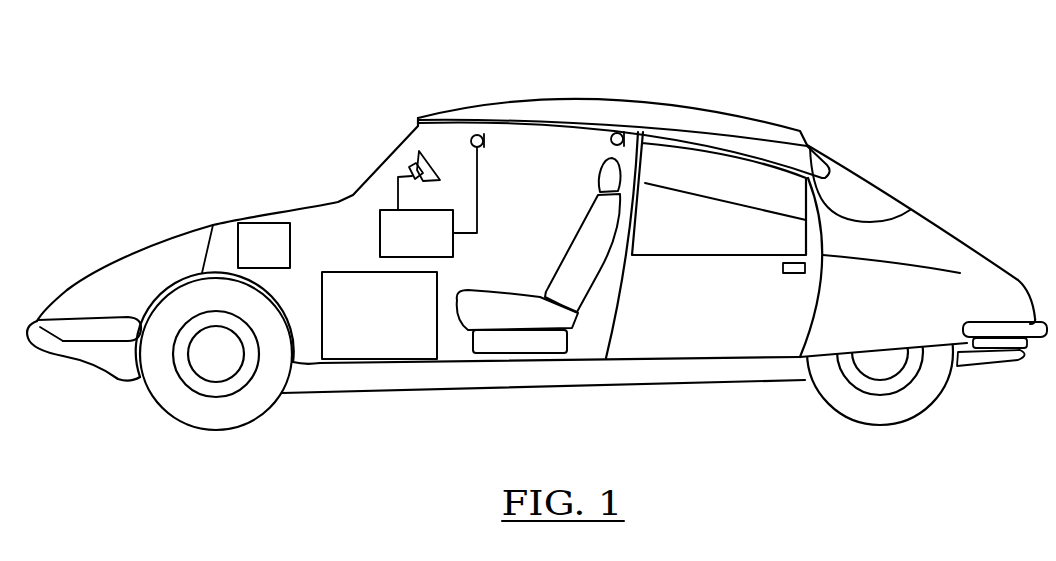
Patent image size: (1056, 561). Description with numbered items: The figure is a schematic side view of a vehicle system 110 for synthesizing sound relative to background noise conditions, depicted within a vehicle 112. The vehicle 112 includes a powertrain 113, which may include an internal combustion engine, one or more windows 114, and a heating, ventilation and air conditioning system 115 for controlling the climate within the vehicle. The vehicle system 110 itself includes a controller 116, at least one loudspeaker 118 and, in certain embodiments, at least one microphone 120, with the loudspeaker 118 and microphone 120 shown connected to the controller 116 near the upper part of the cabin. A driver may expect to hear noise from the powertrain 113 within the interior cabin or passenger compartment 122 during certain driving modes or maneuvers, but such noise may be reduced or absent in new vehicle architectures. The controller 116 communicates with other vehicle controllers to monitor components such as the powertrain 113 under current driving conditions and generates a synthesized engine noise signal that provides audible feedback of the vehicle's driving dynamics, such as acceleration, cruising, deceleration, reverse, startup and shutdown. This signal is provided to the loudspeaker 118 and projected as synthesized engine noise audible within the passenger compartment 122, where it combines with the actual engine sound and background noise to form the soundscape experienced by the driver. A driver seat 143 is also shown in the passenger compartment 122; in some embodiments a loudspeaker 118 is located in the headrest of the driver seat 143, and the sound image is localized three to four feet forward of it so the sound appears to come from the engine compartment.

The vehicle system 110 is at (330, 64).
The vehicle 112 is at (862, 175).
The powertrain 113 is at (262, 213).
The windows 114 is at (717, 145).
The heating, ventilation and air conditioning (HVAC) system 115 is at (362, 345).
The controller 116 is at (435, 246).
The loudspeaker 118 is at (410, 165).
The microphone 120 is at (477, 134).
The passenger compartment 122 is at (535, 146).
The driver seat 143 is at (626, 200).